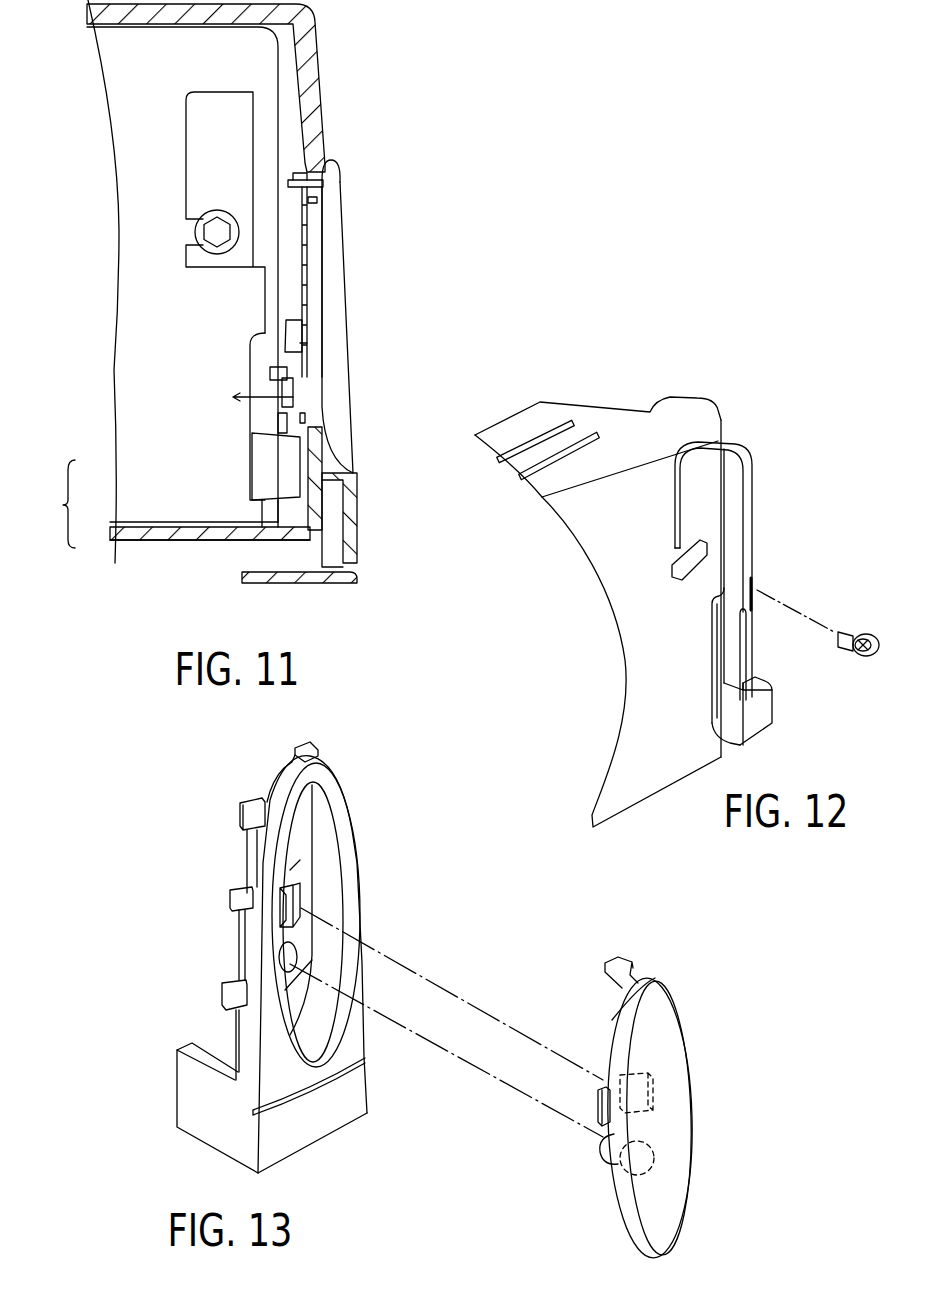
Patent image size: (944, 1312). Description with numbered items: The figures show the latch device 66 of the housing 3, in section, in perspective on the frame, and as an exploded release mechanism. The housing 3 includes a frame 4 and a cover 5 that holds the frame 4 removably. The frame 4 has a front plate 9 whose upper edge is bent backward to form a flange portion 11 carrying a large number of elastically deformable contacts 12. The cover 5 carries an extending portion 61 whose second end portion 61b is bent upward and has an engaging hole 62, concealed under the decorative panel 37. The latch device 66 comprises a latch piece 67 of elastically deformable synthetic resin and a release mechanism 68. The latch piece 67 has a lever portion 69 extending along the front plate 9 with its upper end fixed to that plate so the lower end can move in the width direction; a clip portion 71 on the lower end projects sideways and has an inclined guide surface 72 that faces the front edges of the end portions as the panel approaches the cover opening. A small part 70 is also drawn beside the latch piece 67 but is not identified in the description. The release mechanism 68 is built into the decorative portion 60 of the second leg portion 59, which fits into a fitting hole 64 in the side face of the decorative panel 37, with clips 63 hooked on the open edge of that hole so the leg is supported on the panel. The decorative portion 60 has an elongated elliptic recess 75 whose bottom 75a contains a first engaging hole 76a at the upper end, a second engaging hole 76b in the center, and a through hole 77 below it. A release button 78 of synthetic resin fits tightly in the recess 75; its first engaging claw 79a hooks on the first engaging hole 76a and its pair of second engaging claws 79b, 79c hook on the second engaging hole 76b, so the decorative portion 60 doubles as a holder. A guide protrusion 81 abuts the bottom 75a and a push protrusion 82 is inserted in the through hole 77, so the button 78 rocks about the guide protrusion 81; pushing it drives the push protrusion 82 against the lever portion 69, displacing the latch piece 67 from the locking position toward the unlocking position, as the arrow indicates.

In FIG. 11, the housing 3 is at (60, 504).
In FIG. 11, the frame 4 is at (123, 473).
In FIG. 12, the frame 4 is at (690, 403).
In FIG. 11, the cover 5 is at (113, 524).
In FIG. 11, the front plate 9 is at (117, 257).
In FIG. 12, the front plate 9 is at (628, 613).
In FIG. 12, the flange portion 11 is at (597, 417).
In FIG. 12, the contacts 12 is at (543, 448).
In FIG. 11, the decorative panel 37 is at (310, 46).
In FIG. 11, the second leg portion 59 is at (290, 584).
In FIG. 13, the second leg portion 59 is at (316, 1138).
In FIG. 11, the decorative portion 60 is at (357, 487).
In FIG. 13, the decorative portion 60 is at (360, 893).
In FIG. 11, the extending portion 61 is at (193, 541).
In FIG. 11, the second end portion 61b is at (277, 424).
In FIG. 11, the engaging hole 62 is at (277, 501).
In FIG. 13, the clips 63 is at (318, 754).
In FIG. 11, the fitting hole 64 is at (340, 167).
In FIG. 11, the latch device 66 is at (245, 347).
In FIG. 11, the latch piece 67 is at (260, 302).
In FIG. 12, the latch piece 67 is at (708, 600).
In FIG. 11, the release mechanism 68 is at (217, 222).
In FIG. 13, the release mechanism 68 is at (695, 1230).
In FIG. 11, the lever portion 69 is at (252, 423).
In FIG. 12, the lever portion 69 is at (748, 583).
In FIG. 12, the screw 70 is at (876, 636).
In FIG. 11, the clip portion 71 is at (290, 455).
In FIG. 12, the clip portion 71 is at (774, 721).
In FIG. 12, the guide surface 72 is at (745, 678).
In FIG. 11, the recess 75 is at (330, 189).
In FIG. 13, the recess 75 is at (328, 863).
In FIG. 11, the bottom 75a is at (307, 255).
In FIG. 13, the bottom 75a is at (292, 859).
In FIG. 11, the first engaging hole 76a is at (290, 192).
In FIG. 11, the second engaging hole 76b is at (308, 325).
In FIG. 13, the second engaging hole 76b is at (302, 908).
In FIG. 11, the through hole 77 is at (305, 418).
In FIG. 13, the through hole 77 is at (293, 950).
In FIG. 11, the release button 78 is at (347, 283).
In FIG. 13, the release button 78 is at (678, 1033).
In FIG. 11, the first engaging claw 79a is at (300, 172).
In FIG. 13, the first engaging claw 79a is at (620, 965).
In FIG. 11, the second engaging claw 79b is at (302, 343).
In FIG. 13, the second engaging claw 79b is at (598, 1107).
In FIG. 13, the second engaging claw 79c is at (660, 1088).
In FIG. 11, the guide protrusion 81 is at (317, 200).
In FIG. 11, the push protrusion 82 is at (282, 381).
In FIG. 13, the push protrusion 82 is at (603, 1163).